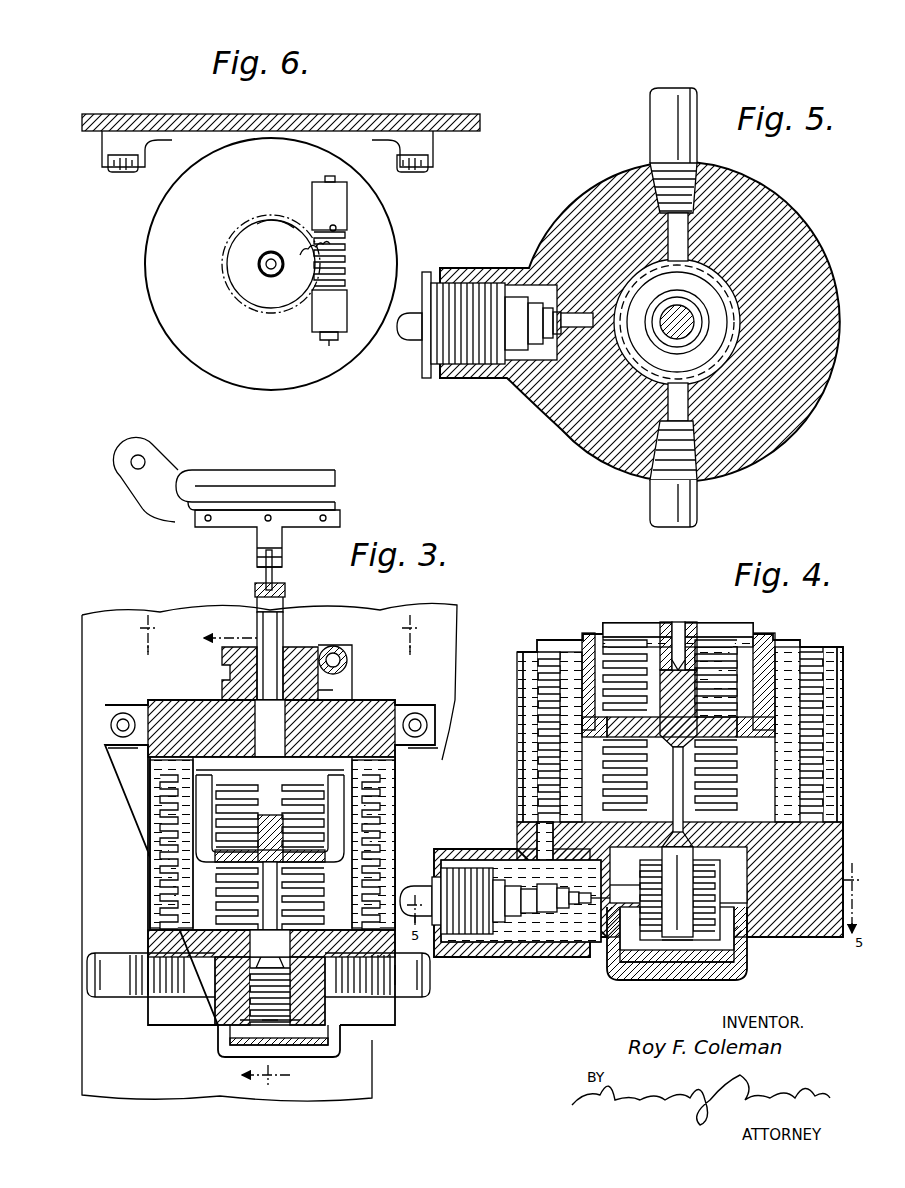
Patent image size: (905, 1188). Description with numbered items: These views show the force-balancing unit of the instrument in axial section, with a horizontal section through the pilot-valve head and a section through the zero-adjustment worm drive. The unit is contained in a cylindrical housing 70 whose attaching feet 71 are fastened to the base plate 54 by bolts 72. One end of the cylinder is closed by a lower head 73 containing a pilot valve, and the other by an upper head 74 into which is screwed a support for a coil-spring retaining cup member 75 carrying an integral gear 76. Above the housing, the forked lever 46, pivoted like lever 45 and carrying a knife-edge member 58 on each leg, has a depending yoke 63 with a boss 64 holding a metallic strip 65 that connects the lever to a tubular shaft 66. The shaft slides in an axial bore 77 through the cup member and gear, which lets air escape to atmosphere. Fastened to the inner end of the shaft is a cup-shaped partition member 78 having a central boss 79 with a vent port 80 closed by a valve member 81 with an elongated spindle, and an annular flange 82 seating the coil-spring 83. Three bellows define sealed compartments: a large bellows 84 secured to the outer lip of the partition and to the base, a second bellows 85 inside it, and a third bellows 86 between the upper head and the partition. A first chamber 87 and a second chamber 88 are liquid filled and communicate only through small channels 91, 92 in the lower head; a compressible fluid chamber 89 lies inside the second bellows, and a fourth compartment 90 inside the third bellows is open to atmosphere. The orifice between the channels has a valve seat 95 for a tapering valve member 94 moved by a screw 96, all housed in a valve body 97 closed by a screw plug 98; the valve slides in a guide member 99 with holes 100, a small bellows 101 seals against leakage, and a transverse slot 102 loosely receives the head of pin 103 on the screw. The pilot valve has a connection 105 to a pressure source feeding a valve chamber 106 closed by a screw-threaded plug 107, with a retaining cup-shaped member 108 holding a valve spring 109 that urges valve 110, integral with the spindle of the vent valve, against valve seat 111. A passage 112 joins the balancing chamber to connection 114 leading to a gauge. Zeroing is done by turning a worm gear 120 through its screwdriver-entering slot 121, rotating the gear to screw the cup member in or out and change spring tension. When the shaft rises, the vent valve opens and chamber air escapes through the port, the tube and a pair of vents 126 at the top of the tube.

In FIG. 3, the lever 45 is at (166, 465).
In FIG. 3, the forked lever 46 is at (300, 470).
In FIG. 6, the base plate 54 is at (408, 124).
In FIG. 3, the base plate 54 is at (448, 630).
In FIG. 3, the knife-edge member 58 is at (226, 504).
In FIG. 3, the depending yoke 63 is at (260, 533).
In FIG. 3, the boss 64 is at (280, 550).
In FIG. 3, the metallic strip 65 is at (266, 575).
In FIG. 6, the tubular shaft 66 is at (270, 252).
In FIG. 3, the tubular shaft 66 is at (284, 642).
In FIG. 4, the tubular shaft 66 is at (663, 620).
In FIG. 6, the cylindrical housing 70 is at (153, 306).
In FIG. 3, the cylindrical housing 70 is at (398, 832).
In FIG. 4, the cylindrical housing 70 is at (518, 737).
In FIG. 6, the attaching feet 71 is at (110, 142).
In FIG. 3, the attaching feet 71 is at (118, 704).
In FIG. 6, the bolts 72 is at (124, 173).
In FIG. 3, the bolts 72 is at (126, 742).
In FIG. 5, the lower head 73 is at (783, 218).
In FIG. 3, the lower head 73 is at (382, 1026).
In FIG. 4, the lower head 73 is at (827, 935).
In FIG. 6, the upper head 74 is at (160, 278).
In FIG. 3, the upper head 74 is at (220, 712).
In FIG. 3, the coil-spring retaining cup member 75 is at (350, 742).
In FIG. 6, the gear 76 is at (230, 270).
In FIG. 3, the gear 76 is at (318, 662).
In FIG. 3, the axial bore 77 is at (332, 692).
In FIG. 3, the cup-shaped partition member 78 is at (160, 829).
In FIG. 4, the cup-shaped partition member 78 is at (773, 634).
In FIG. 3, the central boss 79 is at (240, 860).
In FIG. 4, the central boss 79 is at (700, 740).
In FIG. 3, the vent port 80 is at (274, 892).
In FIG. 4, the vent port 80 is at (683, 620).
In FIG. 3, the valve member 81 is at (166, 905).
In FIG. 4, the valve member 81 is at (603, 748).
In FIG. 3, the annular flange 82 is at (384, 836).
In FIG. 3, the coil-spring 83 is at (384, 802).
In FIG. 4, the coil-spring 83 is at (723, 637).
In FIG. 3, the large bellows 84 is at (378, 862).
In FIG. 4, the large bellows 84 is at (543, 773).
In FIG. 3, the second bellows 85 is at (178, 912).
In FIG. 3, the third bellows 86 is at (194, 738).
In FIG. 4, the chamber 87 is at (520, 690).
In FIG. 3, the second chamber 88 is at (164, 852).
In FIG. 4, the second chamber 88 is at (572, 633).
In FIG. 3, the compressible fluid chamber 89 is at (402, 958).
In FIG. 4, the compressible fluid chamber 89 is at (460, 957).
In FIG. 3, the fourth compartment 90 is at (362, 744).
In FIG. 4, the fourth compartment 90 is at (708, 630).
In FIG. 5, the channel 91 is at (548, 310).
In FIG. 4, the channel 91 is at (585, 903).
In FIG. 5, the channel 92 is at (585, 313).
In FIG. 4, the channel 92 is at (640, 880).
In FIG. 5, the tapering valve member 94 is at (516, 297).
In FIG. 4, the tapering valve member 94 is at (545, 912).
In FIG. 5, the valve seat 95 is at (560, 312).
In FIG. 4, the valve seat 95 is at (598, 900).
In FIG. 5, the screw 96 is at (418, 341).
In FIG. 4, the screw 96 is at (475, 942).
In FIG. 4, the valve body 97 is at (528, 913).
In FIG. 5, the screw plug 98 is at (428, 378).
In FIG. 4, the screw plug 98 is at (487, 940).
In FIG. 5, the guide member 99 is at (535, 303).
In FIG. 4, the guide member 99 is at (562, 908).
In FIG. 4, the holes 100 is at (574, 905).
In FIG. 5, the small bellows 101 is at (467, 283).
In FIG. 4, the small bellows 101 is at (470, 868).
In FIG. 4, the transverse slot 102 is at (512, 886).
In FIG. 4, the pin 103 is at (498, 880).
In FIG. 5, the connection 105 is at (700, 500).
In FIG. 3, the connection 105 is at (410, 998).
In FIG. 4, the valve chamber 106 is at (767, 937).
In FIG. 3, the screw-threaded plug 107 is at (330, 1046).
In FIG. 4, the screw-threaded plug 107 is at (747, 962).
In FIG. 5, the retaining cup-shaped member 108 is at (700, 300).
In FIG. 3, the retaining cup-shaped member 108 is at (228, 1042).
In FIG. 4, the retaining cup-shaped member 108 is at (670, 965).
In FIG. 5, the valve spring 109 is at (714, 284).
In FIG. 3, the valve spring 109 is at (288, 1042).
In FIG. 4, the valve spring 109 is at (700, 940).
In FIG. 5, the valve 110 is at (797, 257).
In FIG. 3, the valve 110 is at (289, 994).
In FIG. 4, the valve 110 is at (600, 900).
In FIG. 3, the valve seat 111 is at (309, 986).
In FIG. 4, the valve seat 111 is at (702, 895).
In FIG. 3, the passage 112 is at (234, 991).
In FIG. 5, the connection 114 is at (700, 105).
In FIG. 3, the connection 114 is at (98, 990).
In FIG. 6, the worm gear 120 is at (350, 258).
In FIG. 3, the worm gear 120 is at (348, 665).
In FIG. 6, the screwdriver-entering slot 121 is at (331, 345).
In FIG. 6, the vents 126 is at (283, 270).
In FIG. 3, the vents 126 is at (285, 622).